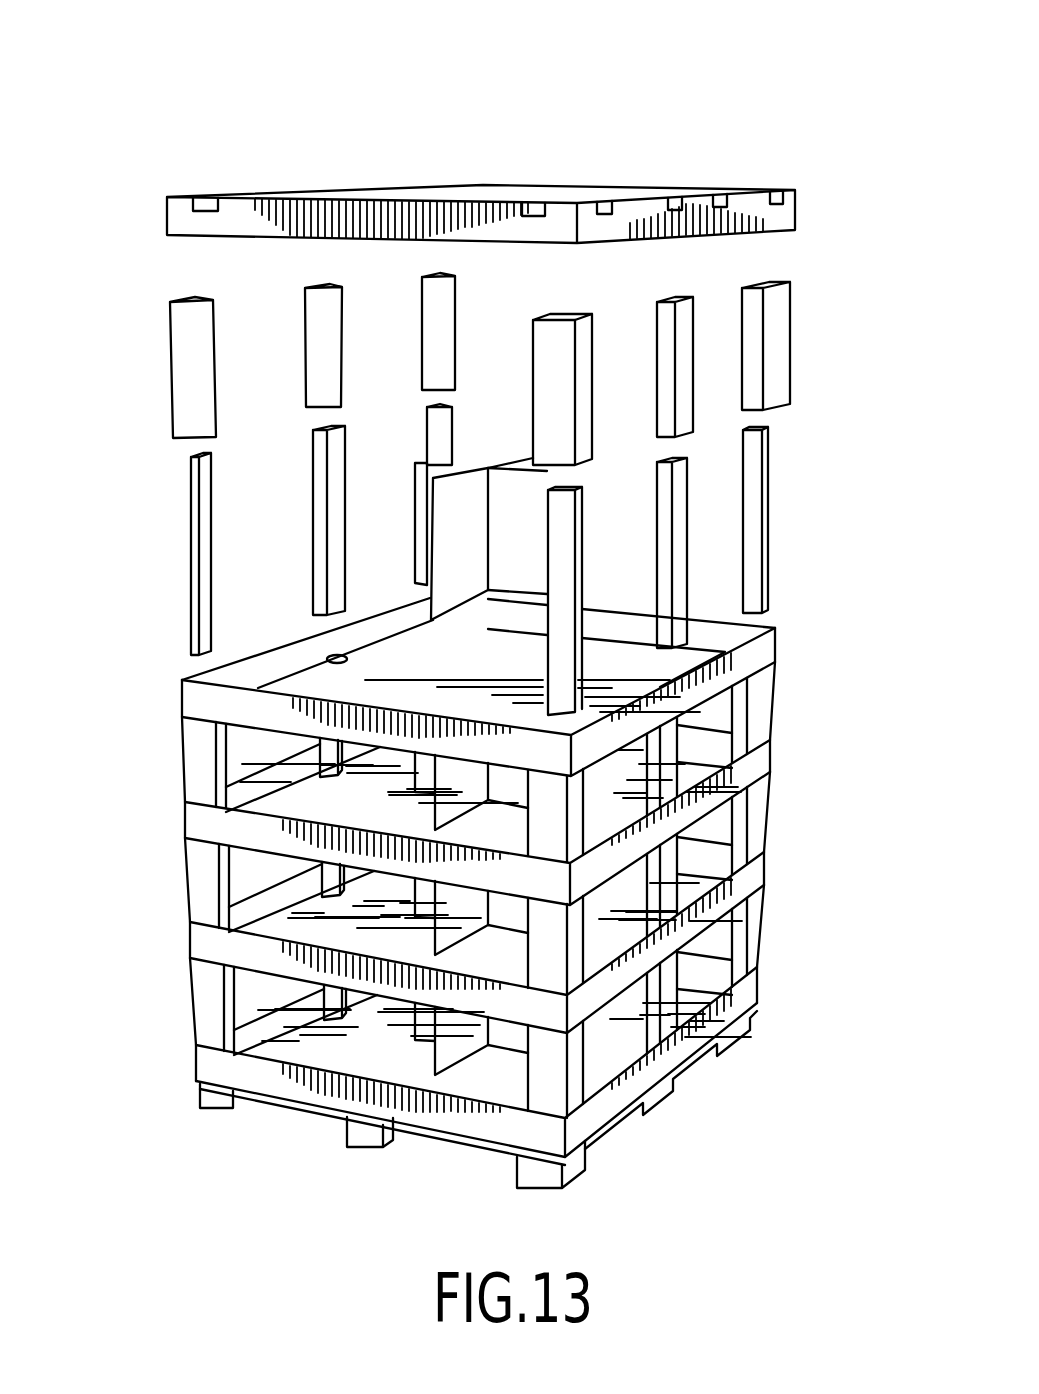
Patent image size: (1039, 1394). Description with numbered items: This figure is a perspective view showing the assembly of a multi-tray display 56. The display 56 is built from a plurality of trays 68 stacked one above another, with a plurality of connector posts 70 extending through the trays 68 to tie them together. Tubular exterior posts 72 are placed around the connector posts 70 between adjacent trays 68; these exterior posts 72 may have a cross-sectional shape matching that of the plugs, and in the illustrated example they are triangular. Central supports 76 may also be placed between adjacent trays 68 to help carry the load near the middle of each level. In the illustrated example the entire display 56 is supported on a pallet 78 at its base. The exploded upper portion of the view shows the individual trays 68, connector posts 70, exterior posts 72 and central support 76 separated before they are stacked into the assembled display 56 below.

The display 56 is at (133, 113).
The tray 68 is at (165, 213).
The connector post 70 is at (197, 558).
The tubular exterior post 72 is at (183, 357).
The central support 76 is at (481, 557).
The pallet 78 is at (355, 1133).